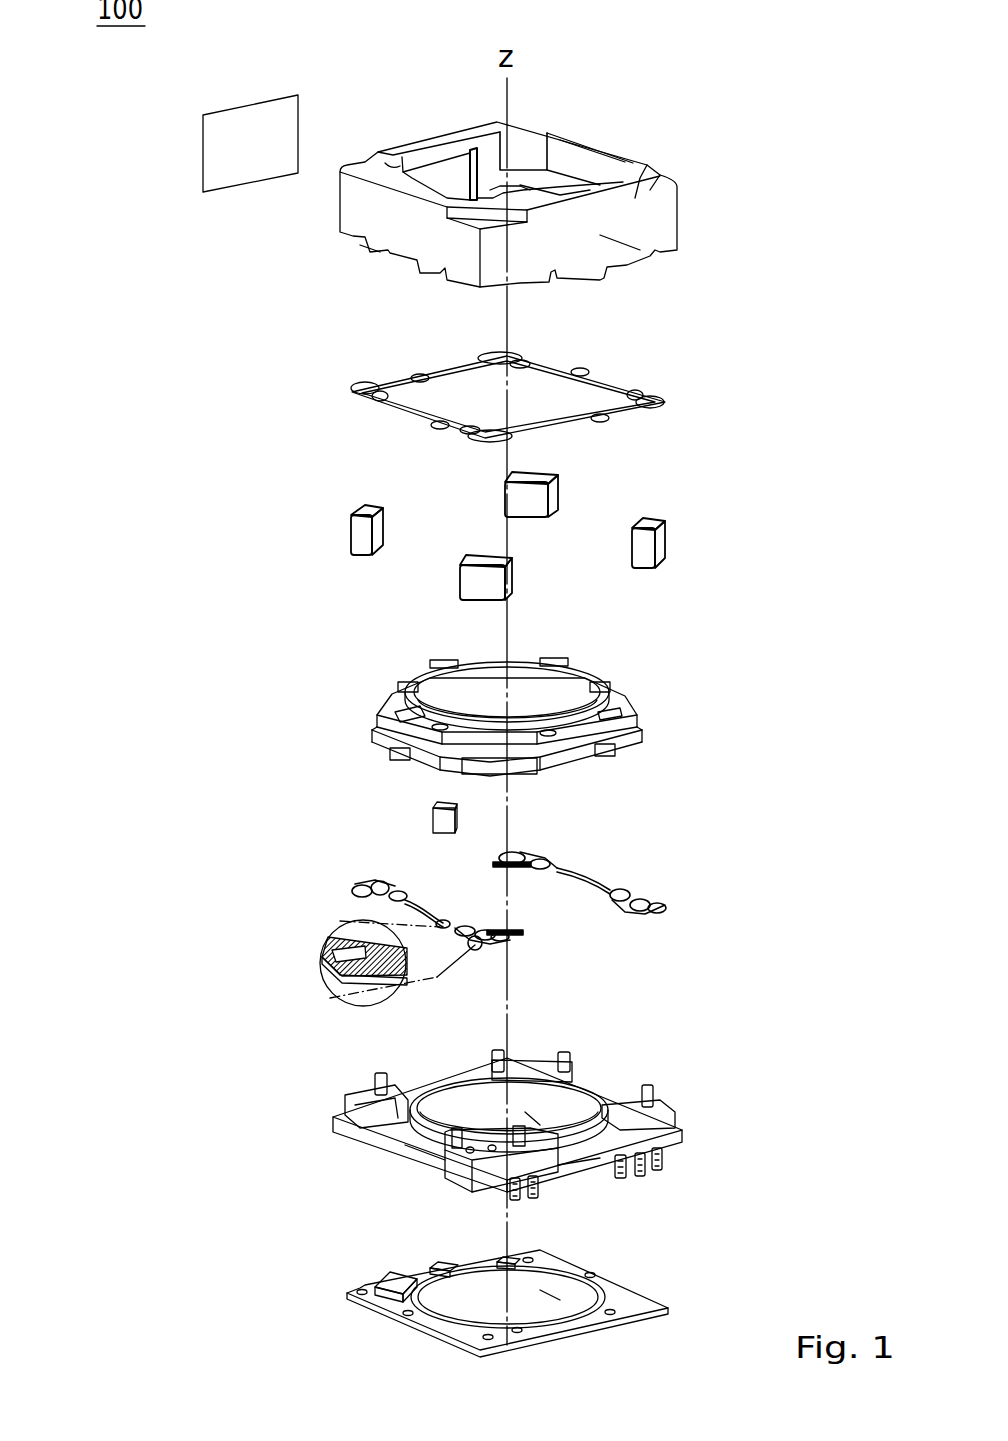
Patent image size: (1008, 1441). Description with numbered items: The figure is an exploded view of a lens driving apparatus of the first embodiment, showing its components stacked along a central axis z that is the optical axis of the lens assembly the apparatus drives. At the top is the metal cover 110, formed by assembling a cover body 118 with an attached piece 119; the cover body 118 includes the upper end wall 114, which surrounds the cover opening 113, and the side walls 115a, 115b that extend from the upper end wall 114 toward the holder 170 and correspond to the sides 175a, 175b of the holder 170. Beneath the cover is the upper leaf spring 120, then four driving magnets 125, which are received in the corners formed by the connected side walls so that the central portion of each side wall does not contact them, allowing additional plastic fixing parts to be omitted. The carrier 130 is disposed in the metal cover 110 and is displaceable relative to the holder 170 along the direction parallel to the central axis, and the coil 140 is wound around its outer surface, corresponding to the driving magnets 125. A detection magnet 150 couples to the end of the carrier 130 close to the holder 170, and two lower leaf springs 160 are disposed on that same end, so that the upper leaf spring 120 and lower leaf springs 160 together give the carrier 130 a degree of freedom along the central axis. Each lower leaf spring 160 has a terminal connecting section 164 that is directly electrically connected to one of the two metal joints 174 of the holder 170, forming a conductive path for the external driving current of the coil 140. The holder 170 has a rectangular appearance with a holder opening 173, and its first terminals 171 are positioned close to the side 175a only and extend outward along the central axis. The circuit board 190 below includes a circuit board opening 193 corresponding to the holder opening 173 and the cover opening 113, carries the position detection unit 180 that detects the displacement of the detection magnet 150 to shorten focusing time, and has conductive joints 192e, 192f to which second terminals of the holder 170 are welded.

The metal cover 110 is at (132, 283).
The cover opening 113 is at (561, 177).
The upper end wall 114 is at (597, 152).
The side wall 115a is at (592, 246).
The side wall 115b is at (390, 240).
The cover body 118 is at (342, 213).
The attached piece 119 is at (217, 152).
The upper leaf spring 120 is at (352, 390).
The driving magnets 125 is at (360, 532).
The carrier 130 is at (405, 683).
The coil 140 is at (378, 722).
The detection magnet 150 is at (422, 820).
The lower leaf spring 160 is at (348, 888).
The terminal connecting section 164 is at (323, 962).
The holder 170 is at (333, 1125).
The first terminals 171 is at (660, 1182).
The holder opening 173 is at (540, 1110).
The metal joints 174 is at (447, 1160).
The side 175a is at (553, 1182).
The side 175b is at (457, 1187).
The position detection unit 180 is at (372, 1288).
The circuit board 190 is at (400, 1318).
The conductive joint 192e is at (430, 1262).
The conductive joint 192f is at (607, 1266).
The circuit board opening 193 is at (526, 1305).